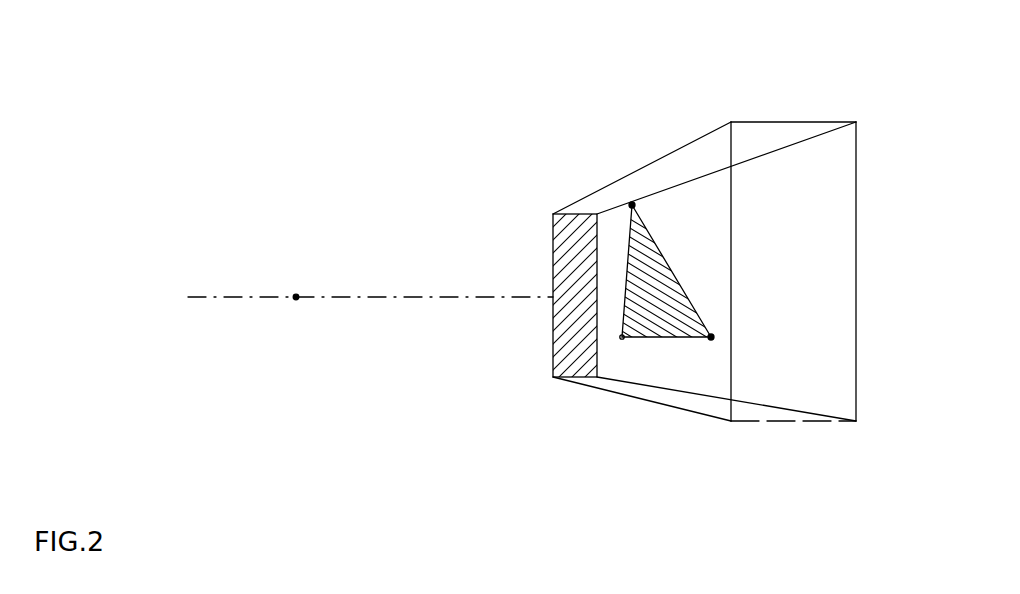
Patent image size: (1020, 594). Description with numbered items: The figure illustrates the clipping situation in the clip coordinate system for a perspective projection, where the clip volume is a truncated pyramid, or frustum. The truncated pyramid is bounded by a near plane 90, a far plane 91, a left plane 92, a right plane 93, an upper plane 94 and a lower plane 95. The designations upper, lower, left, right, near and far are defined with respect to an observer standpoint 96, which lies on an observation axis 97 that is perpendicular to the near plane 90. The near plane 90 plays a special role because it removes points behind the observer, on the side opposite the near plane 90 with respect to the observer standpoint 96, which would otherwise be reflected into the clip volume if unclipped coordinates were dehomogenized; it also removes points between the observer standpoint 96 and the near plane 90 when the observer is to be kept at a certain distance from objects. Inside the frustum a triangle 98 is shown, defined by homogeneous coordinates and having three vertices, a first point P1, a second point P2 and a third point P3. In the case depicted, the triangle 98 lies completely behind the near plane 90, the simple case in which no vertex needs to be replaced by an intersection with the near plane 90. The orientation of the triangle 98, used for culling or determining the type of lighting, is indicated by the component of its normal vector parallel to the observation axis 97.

The near plane 90 is at (557, 252).
The far plane 91 is at (812, 327).
The left plane 92 is at (680, 168).
The right plane 93 is at (817, 170).
The upper plane 94 is at (758, 145).
The lower plane 95 is at (650, 408).
The observer standpoint 96 is at (296, 296).
The observation axis 97 is at (400, 297).
The triangle 98 is at (632, 265).
The first point of the triangle P1 is at (708, 344).
The second point of the triangle P2 is at (633, 199).
The third point of the triangle P3 is at (618, 341).